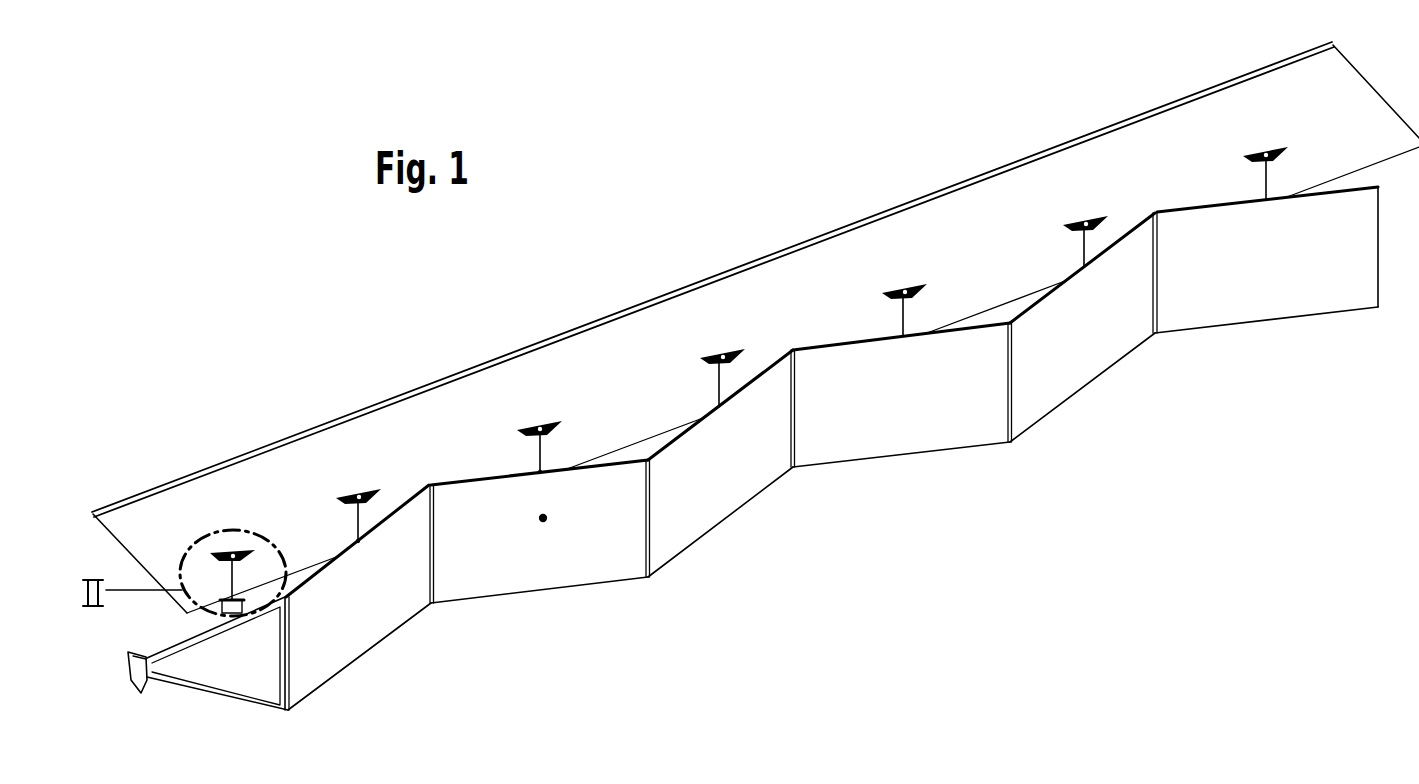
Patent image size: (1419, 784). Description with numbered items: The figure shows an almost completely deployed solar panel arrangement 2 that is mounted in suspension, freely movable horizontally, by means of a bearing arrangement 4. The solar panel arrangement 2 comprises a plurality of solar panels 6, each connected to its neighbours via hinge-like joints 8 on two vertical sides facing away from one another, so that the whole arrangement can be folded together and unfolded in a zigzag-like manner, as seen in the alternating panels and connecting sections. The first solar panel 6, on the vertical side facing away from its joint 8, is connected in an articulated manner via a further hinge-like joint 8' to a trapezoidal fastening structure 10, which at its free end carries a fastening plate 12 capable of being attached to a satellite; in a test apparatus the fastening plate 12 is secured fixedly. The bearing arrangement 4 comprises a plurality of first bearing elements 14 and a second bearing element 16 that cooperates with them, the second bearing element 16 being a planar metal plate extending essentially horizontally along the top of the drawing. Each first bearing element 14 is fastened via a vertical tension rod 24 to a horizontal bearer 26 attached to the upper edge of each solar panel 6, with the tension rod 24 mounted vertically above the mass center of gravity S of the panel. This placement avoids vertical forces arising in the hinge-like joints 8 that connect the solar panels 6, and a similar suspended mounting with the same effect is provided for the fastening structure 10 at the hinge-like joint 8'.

The solar panel arrangement 2 is at (831, 477).
The bearing arrangement 4 is at (765, 326).
The solar panel 6 is at (358, 630).
The hinge-like joint 8 is at (822, 447).
The hinge-like joint 8' is at (317, 682).
The fastening structure 10 is at (227, 703).
The fastening plate 12 is at (147, 692).
The first bearing element 14 is at (228, 543).
The second bearing element 16 is at (986, 217).
The tension rod 24 is at (356, 537).
The horizontal bearer 26 is at (350, 552).
The mass center of gravity S is at (547, 520).